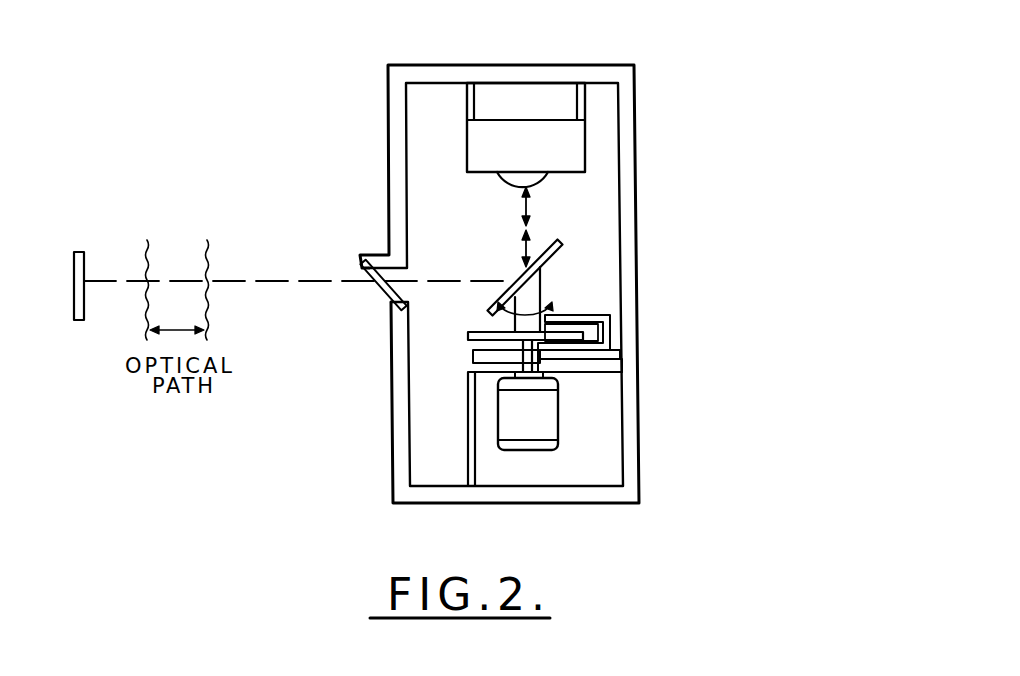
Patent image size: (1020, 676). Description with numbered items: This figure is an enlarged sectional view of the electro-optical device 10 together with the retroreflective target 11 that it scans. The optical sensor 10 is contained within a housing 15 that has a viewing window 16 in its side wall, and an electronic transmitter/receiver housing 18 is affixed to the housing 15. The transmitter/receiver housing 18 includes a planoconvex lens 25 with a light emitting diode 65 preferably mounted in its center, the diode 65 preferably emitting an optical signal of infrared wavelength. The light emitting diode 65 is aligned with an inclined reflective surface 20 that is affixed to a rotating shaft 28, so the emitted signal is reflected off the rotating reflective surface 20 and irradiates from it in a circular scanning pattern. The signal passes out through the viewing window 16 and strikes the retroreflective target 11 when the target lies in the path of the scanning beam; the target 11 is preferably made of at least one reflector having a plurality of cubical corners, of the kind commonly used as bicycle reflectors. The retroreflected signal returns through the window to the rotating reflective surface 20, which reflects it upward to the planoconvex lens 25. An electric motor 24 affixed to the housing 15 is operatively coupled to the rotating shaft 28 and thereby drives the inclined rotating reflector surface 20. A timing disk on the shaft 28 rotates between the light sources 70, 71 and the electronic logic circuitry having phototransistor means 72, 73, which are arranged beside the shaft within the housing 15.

The electro-optical device 10 is at (735, 25).
The retroreflective target 11 is at (78, 243).
The housing 15 is at (453, 56).
The viewing window 16 is at (388, 289).
The electronic transmitter/receiver housing 18 is at (470, 141).
The inclined reflective surface 20 is at (506, 266).
The electric motor 24 is at (556, 444).
The planoconvex lens 25 is at (484, 185).
The rotating shaft 28 is at (546, 273).
The light emitting diode 65 is at (546, 181).
The light source 70 is at (634, 312).
The light source 71 is at (609, 315).
The phototransistor means 72 is at (602, 347).
The phototransistor means 73 is at (612, 348).